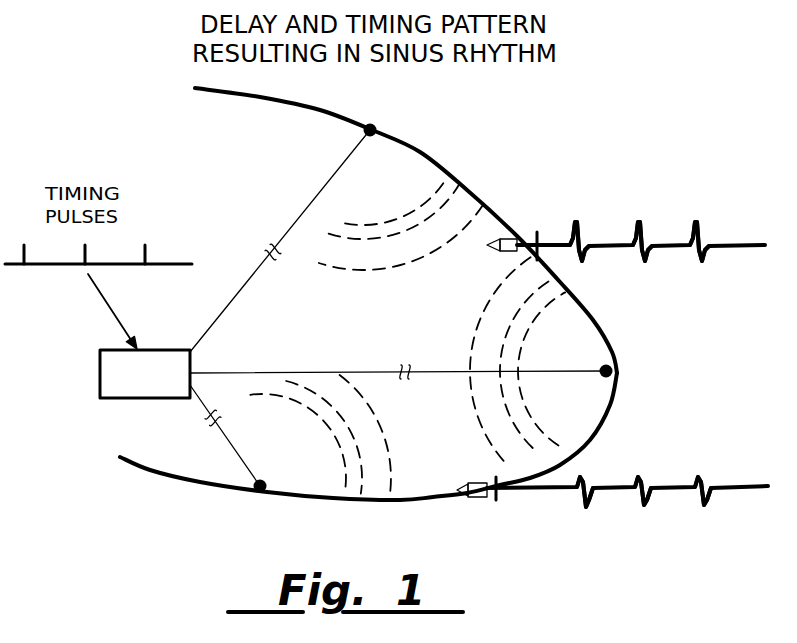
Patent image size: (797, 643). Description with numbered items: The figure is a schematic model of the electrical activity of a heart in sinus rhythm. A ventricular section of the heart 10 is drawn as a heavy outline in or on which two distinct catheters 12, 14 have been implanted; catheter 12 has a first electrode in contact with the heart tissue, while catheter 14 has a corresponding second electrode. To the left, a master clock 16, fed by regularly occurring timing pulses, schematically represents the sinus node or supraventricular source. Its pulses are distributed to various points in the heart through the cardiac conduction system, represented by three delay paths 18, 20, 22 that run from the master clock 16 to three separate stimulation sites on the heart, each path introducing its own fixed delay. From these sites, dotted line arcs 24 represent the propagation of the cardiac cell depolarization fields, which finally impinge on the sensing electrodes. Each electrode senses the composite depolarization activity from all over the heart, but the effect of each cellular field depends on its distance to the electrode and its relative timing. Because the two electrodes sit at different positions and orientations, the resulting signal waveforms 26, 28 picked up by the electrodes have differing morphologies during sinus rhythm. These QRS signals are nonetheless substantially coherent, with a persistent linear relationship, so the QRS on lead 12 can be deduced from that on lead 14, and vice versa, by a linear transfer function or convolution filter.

The ventricular section of the heart 10 is at (423, 143).
The catheter 12 is at (552, 242).
The catheter 14 is at (537, 492).
The master clock 16 is at (100, 362).
The delay path 18 is at (328, 180).
The delay path 20 is at (432, 372).
The delay path 22 is at (240, 458).
The dotted line arcs 24 is at (350, 268).
The signal waveform 26 is at (637, 232).
The signal waveform 28 is at (646, 500).